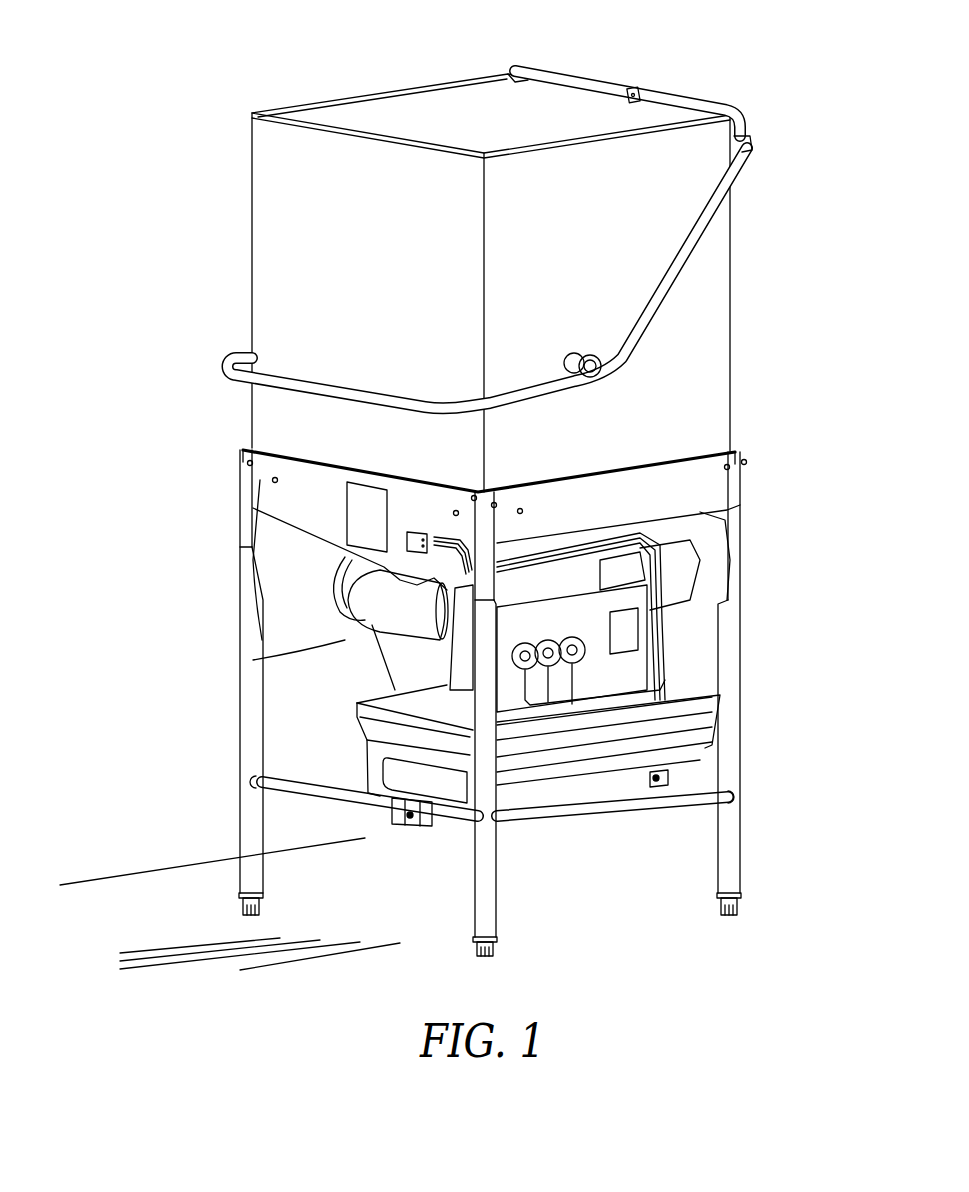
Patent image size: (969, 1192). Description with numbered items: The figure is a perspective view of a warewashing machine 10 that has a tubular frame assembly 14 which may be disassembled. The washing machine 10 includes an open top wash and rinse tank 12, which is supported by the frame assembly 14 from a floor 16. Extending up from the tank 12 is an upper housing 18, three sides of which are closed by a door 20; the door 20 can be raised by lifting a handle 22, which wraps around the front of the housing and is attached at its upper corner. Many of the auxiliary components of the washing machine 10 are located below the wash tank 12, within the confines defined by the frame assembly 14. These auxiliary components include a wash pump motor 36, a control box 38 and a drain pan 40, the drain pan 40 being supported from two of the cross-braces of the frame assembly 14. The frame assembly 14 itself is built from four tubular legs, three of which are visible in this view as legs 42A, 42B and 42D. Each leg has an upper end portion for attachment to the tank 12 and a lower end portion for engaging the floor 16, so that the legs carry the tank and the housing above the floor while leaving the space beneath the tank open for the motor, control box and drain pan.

The warewashing machine 10 is at (780, 68).
The wash and rinse tank 12 is at (265, 492).
The frame assembly 14 is at (238, 720).
The floor 16 is at (121, 931).
The upper housing 18 is at (547, 108).
The door 20 is at (717, 300).
The handle 22 is at (705, 228).
The wash pump motor 36 is at (378, 622).
The control box 38 is at (637, 652).
The drain pan 40 is at (690, 745).
The tubular leg 42A is at (492, 917).
The tubular leg 42B is at (728, 868).
The tubular leg 42D is at (247, 760).